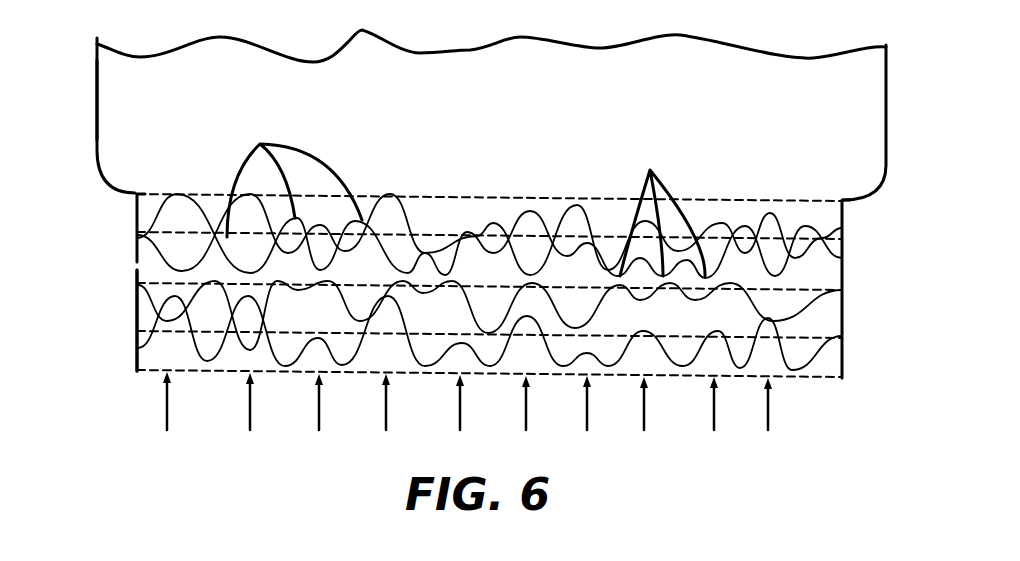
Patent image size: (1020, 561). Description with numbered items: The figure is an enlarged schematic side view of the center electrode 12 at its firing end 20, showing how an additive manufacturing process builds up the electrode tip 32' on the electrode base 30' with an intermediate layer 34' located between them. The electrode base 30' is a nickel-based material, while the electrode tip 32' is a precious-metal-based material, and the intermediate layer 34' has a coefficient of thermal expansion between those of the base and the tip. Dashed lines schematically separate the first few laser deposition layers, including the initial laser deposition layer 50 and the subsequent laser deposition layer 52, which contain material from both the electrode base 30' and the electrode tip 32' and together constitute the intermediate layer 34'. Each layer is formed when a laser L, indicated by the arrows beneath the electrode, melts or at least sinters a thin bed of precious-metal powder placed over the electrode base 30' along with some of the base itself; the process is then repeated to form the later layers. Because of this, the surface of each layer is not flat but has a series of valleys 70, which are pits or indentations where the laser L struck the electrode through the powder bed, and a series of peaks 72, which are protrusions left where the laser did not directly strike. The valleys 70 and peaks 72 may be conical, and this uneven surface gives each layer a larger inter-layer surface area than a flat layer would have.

The center electrode 12 is at (846, 94).
The firing end 20 is at (98, 211).
The electrode base 30' is at (85, 102).
The electrode tip 32' is at (526, 365).
The intermediate layer 34' is at (87, 316).
The initial laser deposition layer 50 is at (822, 223).
The laser deposition layer 52 is at (820, 280).
The valleys 70 is at (294, 176).
The peaks 72 is at (662, 208).
The laser L is at (587, 428).